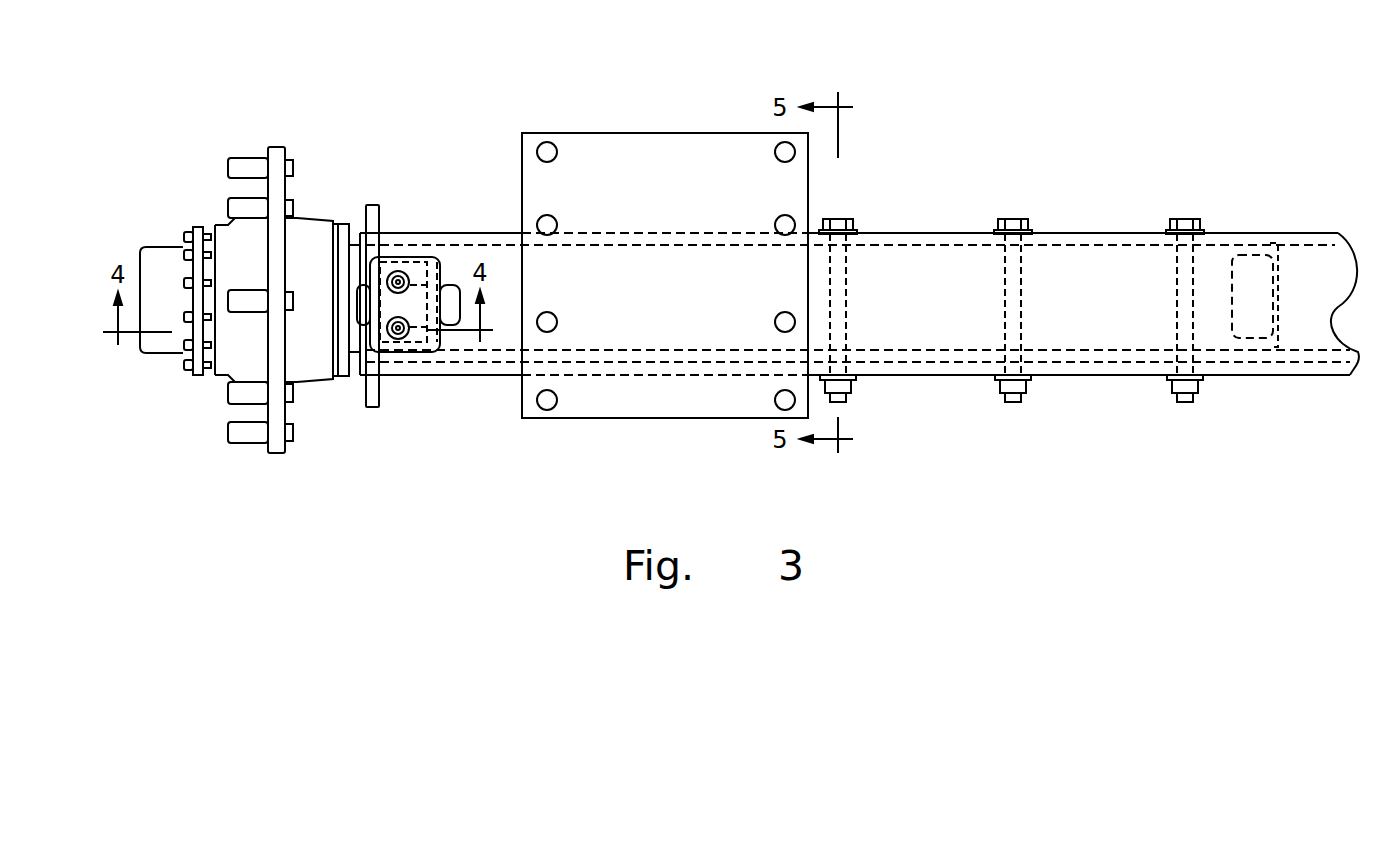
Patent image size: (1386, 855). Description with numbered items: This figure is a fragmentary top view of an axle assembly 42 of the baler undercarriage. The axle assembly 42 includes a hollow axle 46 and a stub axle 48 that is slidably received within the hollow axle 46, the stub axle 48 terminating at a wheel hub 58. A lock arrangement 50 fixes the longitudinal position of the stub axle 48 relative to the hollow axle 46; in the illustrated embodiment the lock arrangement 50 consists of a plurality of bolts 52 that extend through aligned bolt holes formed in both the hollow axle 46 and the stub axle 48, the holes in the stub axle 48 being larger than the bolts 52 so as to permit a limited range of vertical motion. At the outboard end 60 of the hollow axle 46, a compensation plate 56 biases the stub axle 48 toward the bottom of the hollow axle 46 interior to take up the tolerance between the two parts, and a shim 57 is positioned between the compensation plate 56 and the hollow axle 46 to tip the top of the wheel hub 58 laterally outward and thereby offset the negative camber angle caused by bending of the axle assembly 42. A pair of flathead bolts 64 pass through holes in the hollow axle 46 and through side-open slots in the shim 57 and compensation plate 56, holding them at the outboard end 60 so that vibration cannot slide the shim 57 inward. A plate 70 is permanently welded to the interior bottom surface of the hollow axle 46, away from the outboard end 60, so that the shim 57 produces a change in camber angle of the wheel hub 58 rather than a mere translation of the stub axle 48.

The axle assembly 42 is at (1010, 126).
The hollow axle 46 is at (1098, 233).
The stub axle 48 is at (920, 245).
The lock arrangement 50 is at (1033, 398).
The bolts 52 is at (841, 219).
The compensation plate 56 is at (433, 277).
The shim 57 is at (425, 273).
The wheel hub 58 is at (318, 397).
The outboard end 60 is at (392, 378).
The bolts 64 is at (397, 271).
The plate 70 is at (1255, 338).